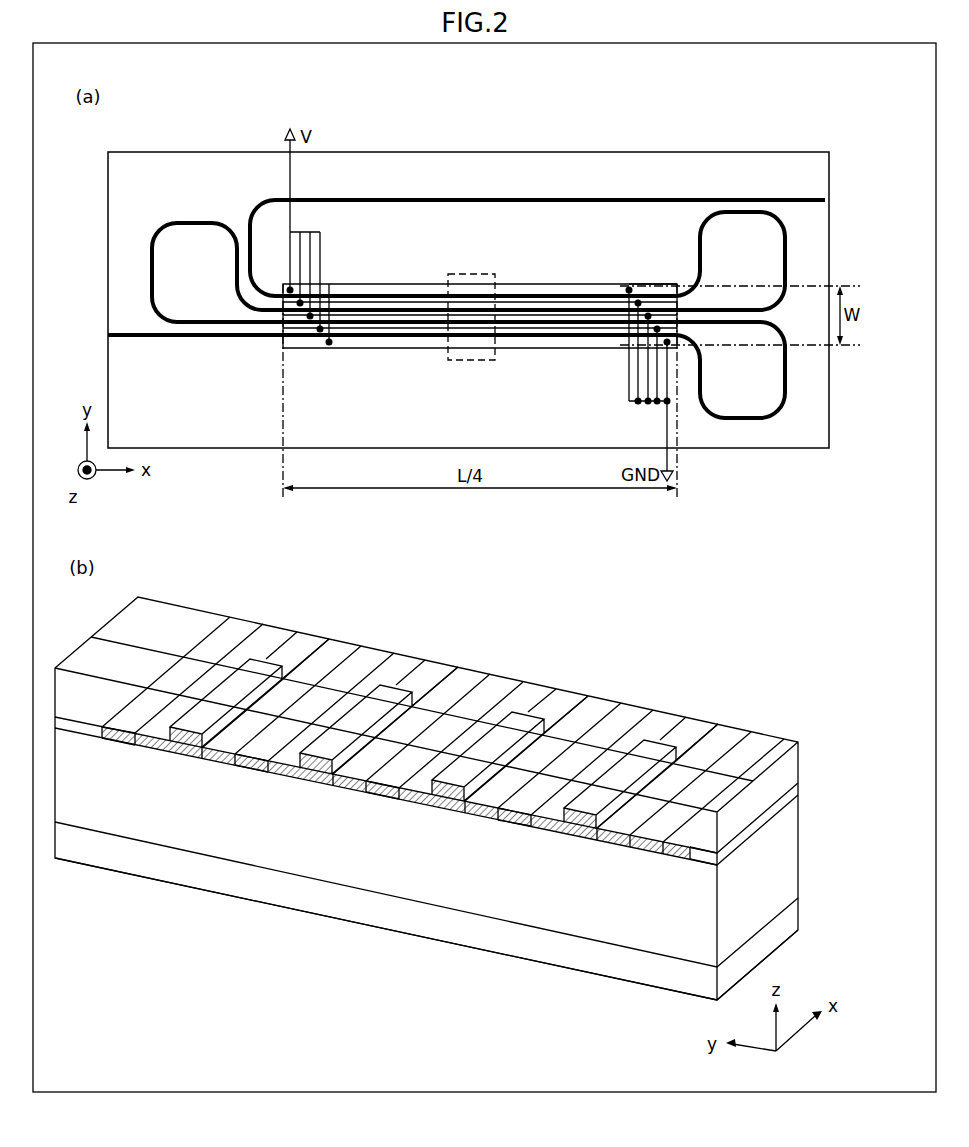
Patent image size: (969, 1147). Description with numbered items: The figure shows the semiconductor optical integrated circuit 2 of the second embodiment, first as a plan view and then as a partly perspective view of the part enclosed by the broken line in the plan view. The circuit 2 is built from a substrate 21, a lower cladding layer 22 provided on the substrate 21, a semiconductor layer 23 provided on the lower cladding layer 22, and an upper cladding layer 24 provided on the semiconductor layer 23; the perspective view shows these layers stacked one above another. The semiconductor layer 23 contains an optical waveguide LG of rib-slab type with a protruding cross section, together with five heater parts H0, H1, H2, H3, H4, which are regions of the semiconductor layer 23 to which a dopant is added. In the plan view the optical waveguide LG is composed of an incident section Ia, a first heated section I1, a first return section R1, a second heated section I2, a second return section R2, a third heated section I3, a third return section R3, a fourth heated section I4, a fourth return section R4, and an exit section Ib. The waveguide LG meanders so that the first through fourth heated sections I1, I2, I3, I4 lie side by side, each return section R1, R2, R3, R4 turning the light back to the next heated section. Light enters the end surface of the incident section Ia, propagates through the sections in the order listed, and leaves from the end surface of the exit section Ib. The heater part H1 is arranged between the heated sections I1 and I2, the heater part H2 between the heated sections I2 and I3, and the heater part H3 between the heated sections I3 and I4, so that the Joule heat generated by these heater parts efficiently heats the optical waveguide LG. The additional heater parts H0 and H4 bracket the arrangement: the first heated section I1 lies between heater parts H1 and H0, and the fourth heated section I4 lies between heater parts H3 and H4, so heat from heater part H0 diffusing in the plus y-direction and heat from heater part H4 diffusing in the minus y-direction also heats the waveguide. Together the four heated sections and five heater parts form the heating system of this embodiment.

The semiconductor optical integrated circuit 2 is at (769, 152).
The substrate 21 is at (800, 913).
The lower cladding layer 22 is at (800, 852).
The semiconductor layer 23 is at (800, 797).
The upper cladding layer 24 is at (800, 768).
The optical waveguide LG is at (130, 332).
The incident section Ia is at (186, 342).
The exit section Ib is at (472, 274).
The first return section R1 is at (783, 373).
The second return section R2 is at (157, 272).
The third return section R3 is at (783, 261).
The fourth return section R4 is at (257, 210).
The first heated section I1 is at (660, 748).
The second heated section I2 is at (532, 718).
The third heated section I3 is at (400, 688).
The fourth heated section I4 is at (262, 655).
The heater part H0 is at (740, 773).
The heater part H1 is at (591, 750).
The heater part H2 is at (465, 720).
The heater part H3 is at (336, 690).
The heater part H4 is at (205, 652).